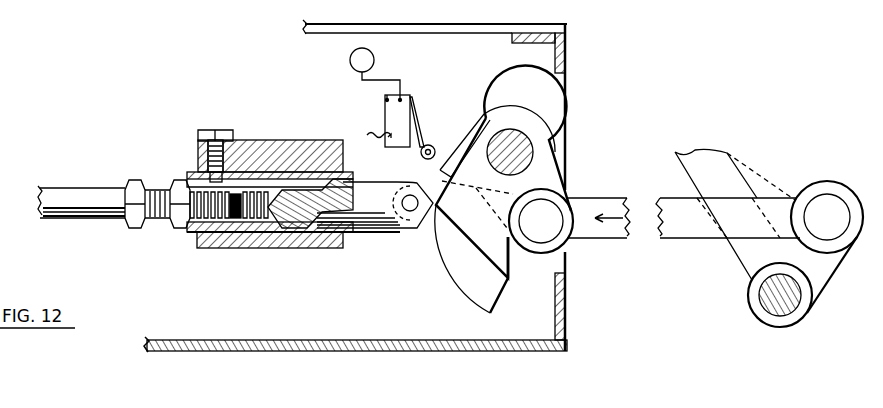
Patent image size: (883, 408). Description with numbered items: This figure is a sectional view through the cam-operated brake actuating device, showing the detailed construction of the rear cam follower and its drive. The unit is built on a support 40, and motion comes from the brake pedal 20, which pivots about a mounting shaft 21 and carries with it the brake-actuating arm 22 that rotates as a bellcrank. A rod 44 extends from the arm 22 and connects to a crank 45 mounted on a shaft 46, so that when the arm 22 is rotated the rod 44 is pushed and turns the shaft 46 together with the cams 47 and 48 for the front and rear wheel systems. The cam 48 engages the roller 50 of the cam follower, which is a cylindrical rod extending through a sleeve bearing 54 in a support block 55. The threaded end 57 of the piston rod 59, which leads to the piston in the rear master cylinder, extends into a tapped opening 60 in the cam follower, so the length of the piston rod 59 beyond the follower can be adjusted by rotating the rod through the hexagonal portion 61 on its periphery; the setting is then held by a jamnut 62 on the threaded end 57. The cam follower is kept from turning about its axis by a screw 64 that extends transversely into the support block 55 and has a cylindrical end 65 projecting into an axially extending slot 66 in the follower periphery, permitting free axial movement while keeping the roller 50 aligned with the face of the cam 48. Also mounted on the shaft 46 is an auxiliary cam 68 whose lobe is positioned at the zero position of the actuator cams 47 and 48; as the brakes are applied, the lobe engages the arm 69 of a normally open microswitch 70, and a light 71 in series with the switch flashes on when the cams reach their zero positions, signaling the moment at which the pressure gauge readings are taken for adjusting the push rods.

The brake pedal 20 is at (723, 175).
The mounting shaft 21 is at (757, 303).
The brake-actuating arm 22 is at (827, 272).
The support 40 is at (567, 50).
The rod 44 is at (603, 230).
The crank 45 is at (563, 170).
The shaft 46 is at (533, 140).
The cam 47 is at (473, 283).
The cam 48 is at (457, 250).
The roller 50 is at (433, 223).
The sleeve bearing 54 is at (287, 233).
The support block 55 is at (220, 248).
The threaded end 57 is at (188, 230).
The piston rod 59 is at (73, 198).
The tapped opening 60 is at (250, 212).
The hexagonal portion 61 is at (127, 226).
The jamnut 62 is at (173, 187).
The screw 64 is at (210, 132).
The cylindrical end 65 is at (193, 173).
The slot 66 is at (290, 185).
The auxiliary cam 68 is at (445, 155).
The arm 69 is at (428, 143).
The microswitch 70 is at (387, 110).
The light 71 is at (374, 58).